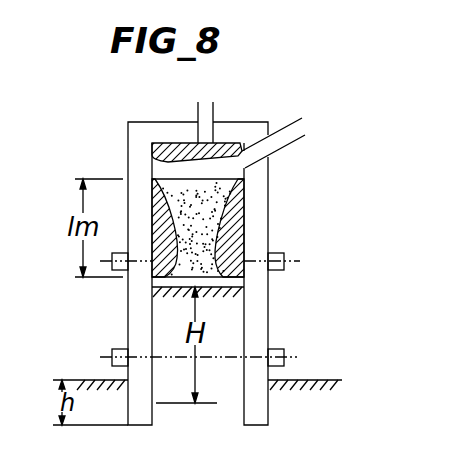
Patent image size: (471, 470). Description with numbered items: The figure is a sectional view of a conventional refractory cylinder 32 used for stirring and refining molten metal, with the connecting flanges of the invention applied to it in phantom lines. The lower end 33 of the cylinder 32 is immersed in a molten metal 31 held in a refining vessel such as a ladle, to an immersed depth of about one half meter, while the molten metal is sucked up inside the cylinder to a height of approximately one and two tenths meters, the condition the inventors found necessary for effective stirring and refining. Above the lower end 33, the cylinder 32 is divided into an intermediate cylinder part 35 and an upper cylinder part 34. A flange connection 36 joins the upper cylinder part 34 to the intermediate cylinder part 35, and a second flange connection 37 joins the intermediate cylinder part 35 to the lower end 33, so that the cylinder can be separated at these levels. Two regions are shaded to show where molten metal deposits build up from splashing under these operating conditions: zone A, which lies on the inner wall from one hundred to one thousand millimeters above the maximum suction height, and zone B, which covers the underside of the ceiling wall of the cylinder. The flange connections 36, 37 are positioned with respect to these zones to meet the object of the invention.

The molten metal 31 is at (305, 380).
The cylinder 32 is at (259, 287).
The lower end 33 is at (132, 405).
The upper cylinder part 34 is at (133, 208).
The intermediate cylinder part 35 is at (128, 322).
The flange connection 36 is at (283, 253).
The flange connection 37 is at (283, 349).
The zone "A" A is at (240, 212).
The zone "B" B is at (183, 143).